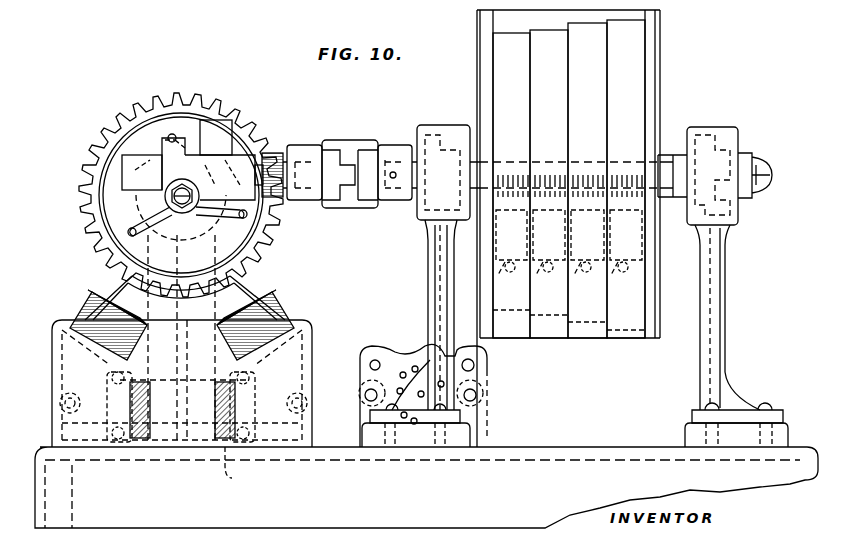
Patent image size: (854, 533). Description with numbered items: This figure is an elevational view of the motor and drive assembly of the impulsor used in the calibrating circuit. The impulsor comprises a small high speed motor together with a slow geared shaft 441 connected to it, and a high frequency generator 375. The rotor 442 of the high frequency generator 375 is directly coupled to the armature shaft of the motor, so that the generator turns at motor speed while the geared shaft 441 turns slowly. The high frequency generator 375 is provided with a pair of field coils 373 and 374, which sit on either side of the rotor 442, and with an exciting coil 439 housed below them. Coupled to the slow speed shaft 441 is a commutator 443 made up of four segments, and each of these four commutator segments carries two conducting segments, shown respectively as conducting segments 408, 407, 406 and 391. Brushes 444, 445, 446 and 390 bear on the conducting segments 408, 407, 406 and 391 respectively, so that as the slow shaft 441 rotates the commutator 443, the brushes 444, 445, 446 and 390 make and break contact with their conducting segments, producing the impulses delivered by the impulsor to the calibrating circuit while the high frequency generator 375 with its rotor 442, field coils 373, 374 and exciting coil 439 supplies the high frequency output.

The rotor 442 is at (180, 95).
The slow geared shaft 441 is at (283, 158).
The commutator 443 is at (667, 82).
The conducting segment 408 is at (511, 185).
The conducting segment 407 is at (549, 184).
The conducting segment 406 is at (587, 180).
The conducting segment 391 is at (626, 179).
The brush 444 is at (511, 260).
The brush 445 is at (549, 262).
The brush 446 is at (587, 266).
The brush 390 is at (626, 270).
The high frequency generator 375 is at (283, 263).
The field coil 373 is at (93, 305).
The field coil 374 is at (283, 303).
The exciting coil 439 is at (225, 447).